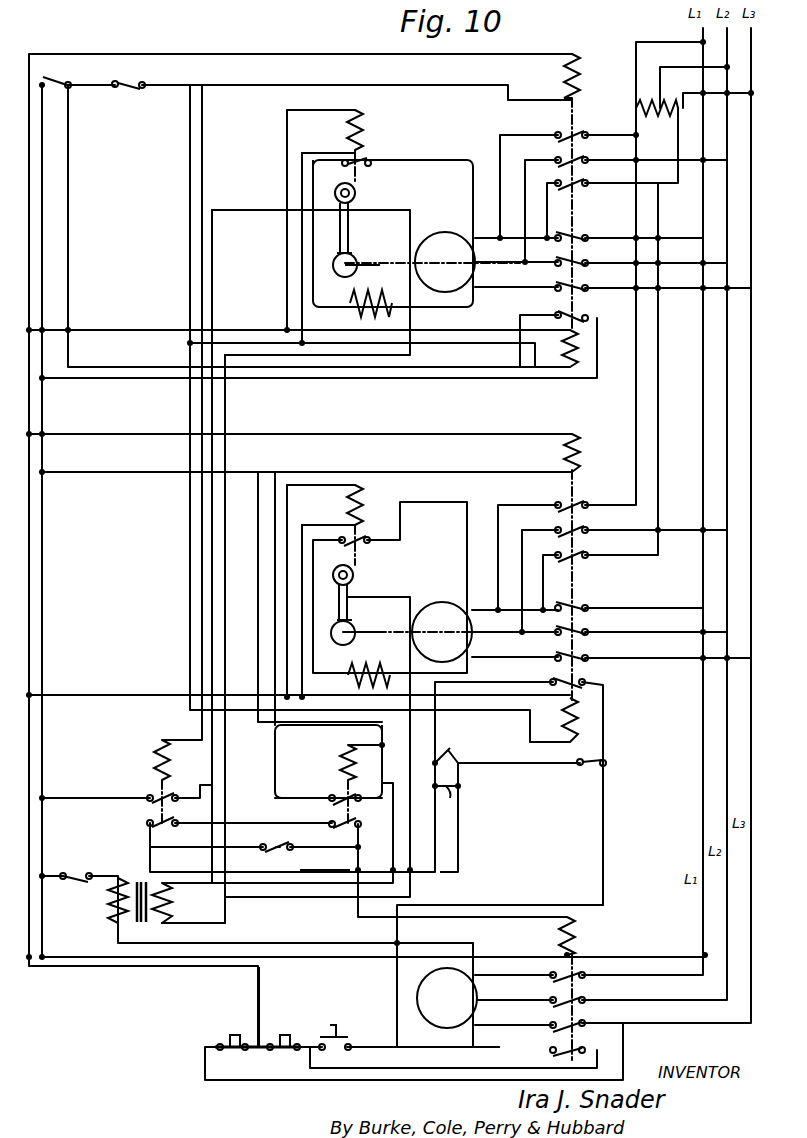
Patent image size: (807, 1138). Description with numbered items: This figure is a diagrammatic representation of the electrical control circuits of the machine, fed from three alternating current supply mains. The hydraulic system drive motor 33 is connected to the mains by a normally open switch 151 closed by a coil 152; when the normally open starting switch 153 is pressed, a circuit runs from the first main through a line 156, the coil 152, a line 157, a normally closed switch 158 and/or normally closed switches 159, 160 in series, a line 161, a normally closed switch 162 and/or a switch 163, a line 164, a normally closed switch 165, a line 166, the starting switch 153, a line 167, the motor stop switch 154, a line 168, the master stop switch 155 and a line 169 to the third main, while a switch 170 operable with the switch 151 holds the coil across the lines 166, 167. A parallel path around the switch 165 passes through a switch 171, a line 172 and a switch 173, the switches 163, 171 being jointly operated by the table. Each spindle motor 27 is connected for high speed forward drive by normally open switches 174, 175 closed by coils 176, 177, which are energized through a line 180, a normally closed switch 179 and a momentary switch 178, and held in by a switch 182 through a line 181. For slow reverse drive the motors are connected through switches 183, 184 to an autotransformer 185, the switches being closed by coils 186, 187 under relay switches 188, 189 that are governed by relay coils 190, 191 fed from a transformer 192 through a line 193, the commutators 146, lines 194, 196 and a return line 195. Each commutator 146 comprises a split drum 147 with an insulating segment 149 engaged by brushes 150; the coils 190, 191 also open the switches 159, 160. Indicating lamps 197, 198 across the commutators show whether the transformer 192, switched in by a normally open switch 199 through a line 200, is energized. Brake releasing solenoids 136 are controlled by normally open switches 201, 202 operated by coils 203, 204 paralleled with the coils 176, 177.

The spindle motor 27 is at (442, 236).
The hydraulic system drive motor 33 is at (428, 984).
The brake releasing solenoid 136 is at (370, 481).
The commutator 146 is at (336, 276).
The split drum 147 is at (354, 272).
The insulating segment 149 is at (352, 258).
The electrical contact brushes 150 is at (350, 246).
The normally open switch 151 is at (578, 972).
The coil 152 is at (584, 928).
The starting switch 153 is at (338, 1030).
The motor stop switch 154 is at (296, 1028).
The master stop switch 155 is at (224, 1044).
The line 156 is at (490, 434).
The line 157 is at (356, 904).
The normally closed switch 158 is at (278, 850).
The normally closed switch 159 is at (336, 830).
The normally closed switch 160 is at (154, 830).
The line 161 is at (338, 871).
The normally closed switch 162 is at (454, 878).
The switch 163 is at (462, 796).
The line 164 is at (462, 822).
The normally closed switch 165 is at (592, 768).
The line 166 is at (602, 856).
The line 167 is at (344, 1074).
The line 168 is at (46, 564).
The line 169 is at (222, 1088).
The switch 170 is at (554, 1054).
The switch 171 is at (454, 754).
The line 172 is at (438, 726).
The switch 173 is at (578, 682).
The normally open switch 174 is at (580, 600).
The normally open switch 175 is at (580, 232).
The coil 176 is at (582, 718).
The coil 177 is at (588, 348).
The normally open switch 178 is at (58, 78).
The normally closed switch 179 is at (132, 80).
The line 180 is at (190, 186).
The line 181 is at (70, 160).
The switch 182 is at (578, 308).
The switch 183 is at (576, 498).
The switch 184 is at (578, 130).
The autotransformer 185 is at (644, 96).
The coil 186 is at (586, 447).
The coil 187 is at (592, 60).
The relay switch 188 is at (340, 790).
The relay switch 189 is at (156, 790).
The relay coil 190 is at (342, 752).
The relay coil 191 is at (154, 746).
The transformer 192 is at (112, 912).
The line 193 is at (394, 206).
The line 194 is at (378, 746).
The line 195 is at (182, 888).
The line 196 is at (260, 211).
The indicating lamp 197 is at (355, 574).
The indicating lamp 198 is at (355, 194).
The normally open switch 199 is at (76, 876).
The line 200 is at (428, 942).
The normally open switch 201 is at (362, 532).
The normally open switch 202 is at (362, 170).
The coil 203 is at (368, 494).
The coil 204 is at (370, 116).